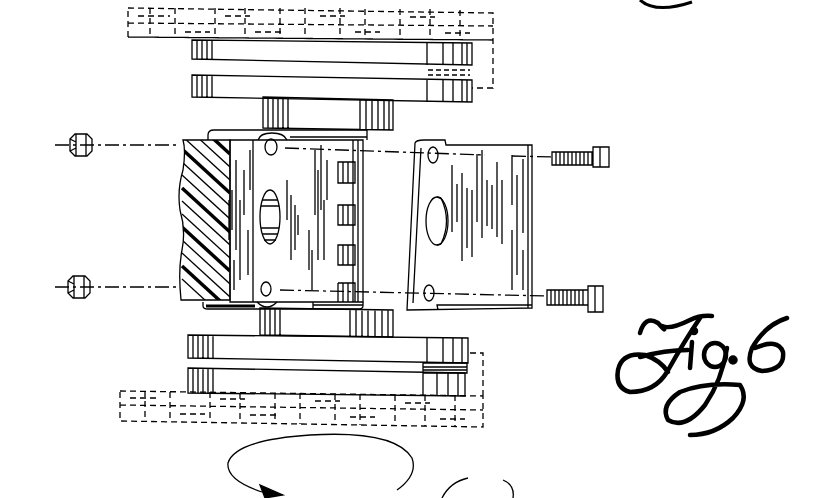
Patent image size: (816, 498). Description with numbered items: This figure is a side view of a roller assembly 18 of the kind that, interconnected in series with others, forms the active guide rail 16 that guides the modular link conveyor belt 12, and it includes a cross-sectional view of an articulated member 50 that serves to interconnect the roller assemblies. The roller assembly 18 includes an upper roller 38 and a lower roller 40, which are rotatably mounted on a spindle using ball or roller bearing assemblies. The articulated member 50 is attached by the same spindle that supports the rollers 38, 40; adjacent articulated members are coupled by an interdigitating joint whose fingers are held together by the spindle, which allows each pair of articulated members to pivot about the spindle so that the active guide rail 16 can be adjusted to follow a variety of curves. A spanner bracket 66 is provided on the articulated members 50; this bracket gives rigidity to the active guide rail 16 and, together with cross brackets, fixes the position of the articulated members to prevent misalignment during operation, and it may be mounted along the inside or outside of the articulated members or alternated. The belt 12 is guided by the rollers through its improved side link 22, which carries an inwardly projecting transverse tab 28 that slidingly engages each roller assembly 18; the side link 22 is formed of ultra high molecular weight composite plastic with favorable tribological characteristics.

The modular link conveyor belt 12 is at (127, 33).
The active guide rail 16 is at (635, 497).
The roller assembly 18 is at (370, 466).
The side link 22 is at (493, 23).
The transverse tab 28 is at (475, 72).
The upper roller 38 is at (190, 88).
The lower roller 40 is at (188, 345).
The articulated member 50 is at (177, 295).
The spanner bracket 66 is at (533, 222).